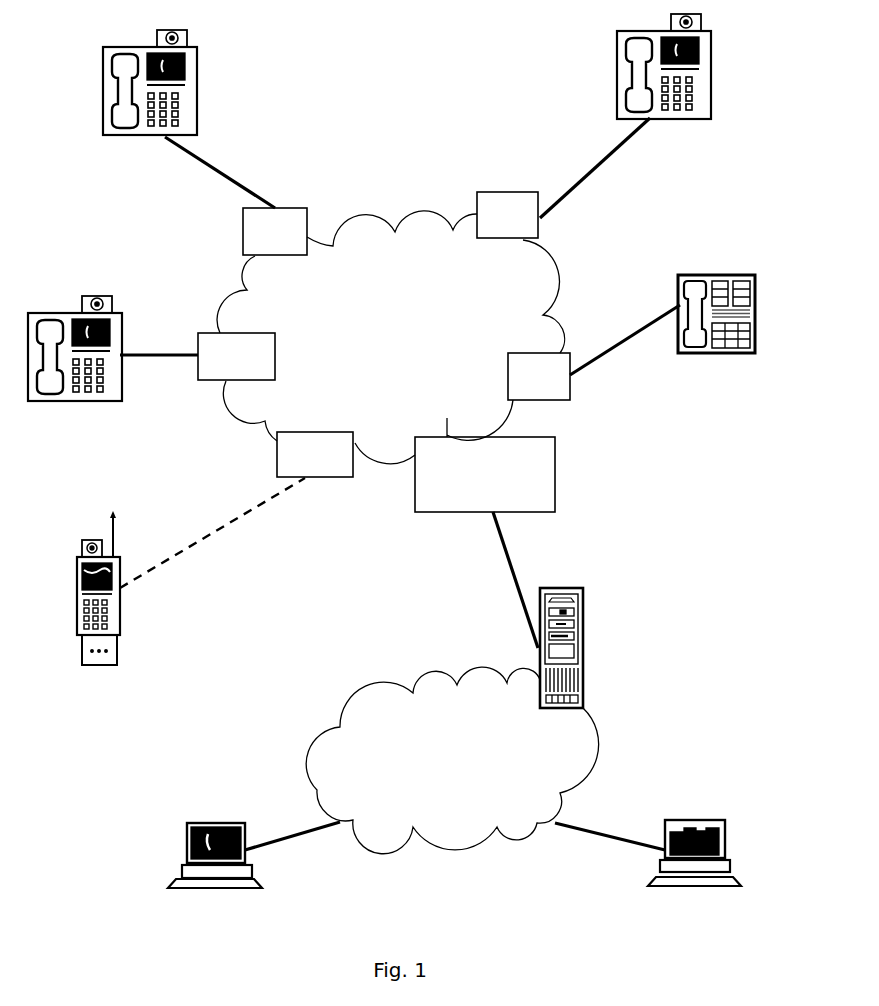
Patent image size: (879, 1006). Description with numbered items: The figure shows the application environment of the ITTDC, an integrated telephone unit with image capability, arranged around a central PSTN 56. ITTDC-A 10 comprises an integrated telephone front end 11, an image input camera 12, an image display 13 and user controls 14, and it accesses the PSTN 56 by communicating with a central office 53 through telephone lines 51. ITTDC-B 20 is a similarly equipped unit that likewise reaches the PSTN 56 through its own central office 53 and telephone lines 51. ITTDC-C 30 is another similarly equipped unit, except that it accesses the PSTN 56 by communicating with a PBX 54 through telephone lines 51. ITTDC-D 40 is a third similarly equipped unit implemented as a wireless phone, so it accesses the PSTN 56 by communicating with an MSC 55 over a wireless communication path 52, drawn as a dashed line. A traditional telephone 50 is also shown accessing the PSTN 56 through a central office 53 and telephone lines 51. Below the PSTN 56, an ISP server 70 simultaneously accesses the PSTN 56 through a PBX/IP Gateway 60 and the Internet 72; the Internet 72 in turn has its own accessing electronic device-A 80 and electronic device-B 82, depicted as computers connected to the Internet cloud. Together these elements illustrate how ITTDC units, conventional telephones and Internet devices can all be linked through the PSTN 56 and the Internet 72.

The ITTDC-A 10 is at (166, 68).
The integrated telephone front end 11 is at (125, 103).
The image input camera 12 is at (157, 36).
The image display 13 is at (186, 72).
The user controls 14 is at (180, 103).
The ITTDC-B 20 is at (598, 72).
The ITTDC-C 30 is at (75, 273).
The ITTDC-D 40 is at (88, 524).
The traditional telephone 50 is at (723, 259).
The telephone lines 51 is at (215, 163).
The wireless communication path 52 is at (228, 523).
The central office 53 is at (290, 228).
The PBX 54 is at (243, 368).
The MSC 55 is at (323, 462).
The PSTN 56 is at (385, 212).
The PBX/IP Gateway 60 is at (540, 460).
The ISP server 70 is at (585, 614).
The Internet 72 is at (381, 659).
The electronic device-A 80 is at (215, 803).
The electronic device-B 82 is at (695, 801).